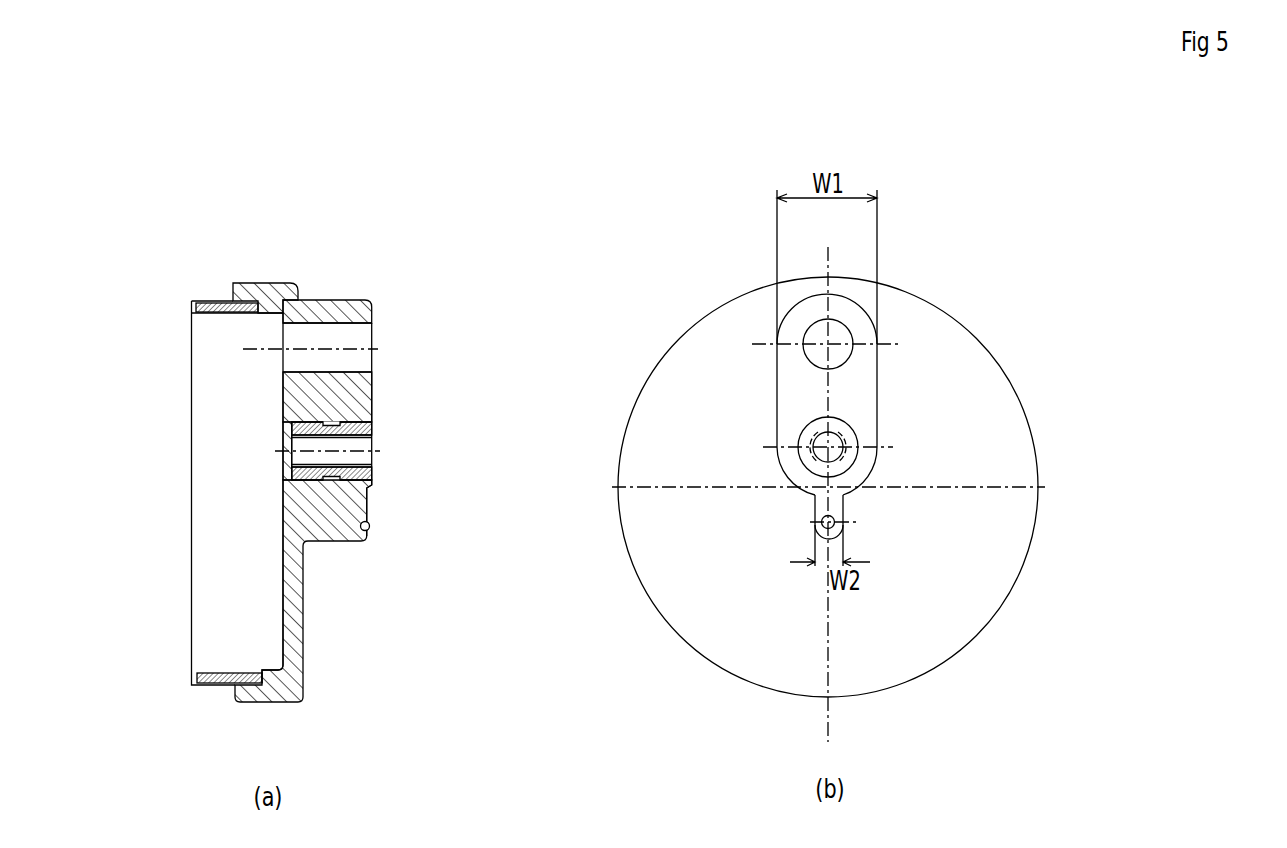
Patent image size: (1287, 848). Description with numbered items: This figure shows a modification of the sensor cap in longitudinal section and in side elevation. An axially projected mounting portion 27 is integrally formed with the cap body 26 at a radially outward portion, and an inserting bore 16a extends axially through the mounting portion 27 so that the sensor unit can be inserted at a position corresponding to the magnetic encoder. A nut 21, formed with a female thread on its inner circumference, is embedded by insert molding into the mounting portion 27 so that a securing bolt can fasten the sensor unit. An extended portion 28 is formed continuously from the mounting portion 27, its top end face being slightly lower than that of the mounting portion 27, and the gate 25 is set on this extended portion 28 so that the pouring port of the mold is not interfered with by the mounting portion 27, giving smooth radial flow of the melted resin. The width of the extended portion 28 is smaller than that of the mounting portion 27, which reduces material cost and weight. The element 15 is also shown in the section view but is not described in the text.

The bracket 15 is at (242, 283).
The cap body 26 is at (313, 305).
The mounting portion 27 is at (342, 303).
The inserting bore 16a is at (355, 330).
The nut 21 is at (370, 430).
The gate 25 is at (370, 525).
The extended portion 28 is at (325, 523).